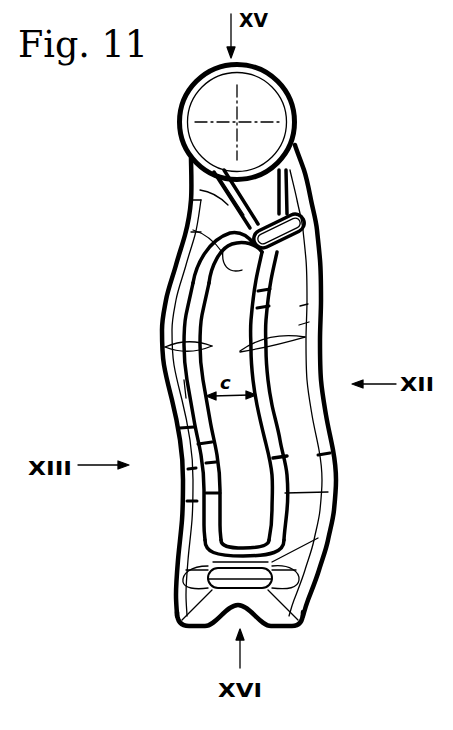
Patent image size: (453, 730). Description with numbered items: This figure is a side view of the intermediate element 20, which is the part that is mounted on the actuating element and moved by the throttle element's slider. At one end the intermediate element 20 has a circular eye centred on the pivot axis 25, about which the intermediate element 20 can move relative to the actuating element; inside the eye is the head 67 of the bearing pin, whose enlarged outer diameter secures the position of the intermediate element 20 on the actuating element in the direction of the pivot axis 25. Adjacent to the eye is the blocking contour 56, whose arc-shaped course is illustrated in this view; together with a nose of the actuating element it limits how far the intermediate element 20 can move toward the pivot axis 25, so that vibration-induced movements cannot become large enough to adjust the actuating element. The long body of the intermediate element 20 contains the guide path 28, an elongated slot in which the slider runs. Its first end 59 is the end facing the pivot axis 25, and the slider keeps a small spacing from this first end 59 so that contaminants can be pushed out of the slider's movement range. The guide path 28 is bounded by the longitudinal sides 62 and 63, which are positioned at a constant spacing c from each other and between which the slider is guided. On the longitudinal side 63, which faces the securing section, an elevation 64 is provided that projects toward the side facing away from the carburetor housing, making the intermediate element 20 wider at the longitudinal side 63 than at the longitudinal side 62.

The intermediate element 20 is at (183, 169).
The pivot axis 25 is at (236, 122).
The head 67 is at (268, 103).
The blocking contour 56 is at (293, 230).
The first end 59 is at (236, 270).
The longitudinal side 63 is at (166, 347).
The longitudinal side 62 is at (305, 337).
The elevation 64 is at (186, 393).
The guide path 28 is at (284, 462).